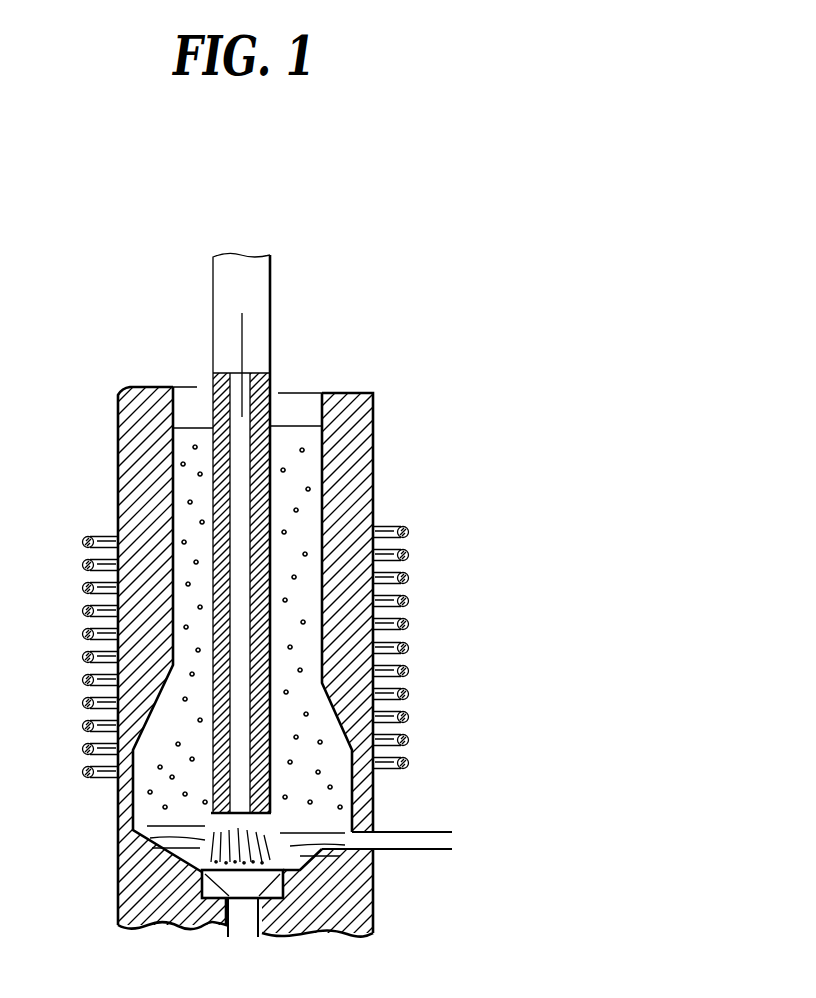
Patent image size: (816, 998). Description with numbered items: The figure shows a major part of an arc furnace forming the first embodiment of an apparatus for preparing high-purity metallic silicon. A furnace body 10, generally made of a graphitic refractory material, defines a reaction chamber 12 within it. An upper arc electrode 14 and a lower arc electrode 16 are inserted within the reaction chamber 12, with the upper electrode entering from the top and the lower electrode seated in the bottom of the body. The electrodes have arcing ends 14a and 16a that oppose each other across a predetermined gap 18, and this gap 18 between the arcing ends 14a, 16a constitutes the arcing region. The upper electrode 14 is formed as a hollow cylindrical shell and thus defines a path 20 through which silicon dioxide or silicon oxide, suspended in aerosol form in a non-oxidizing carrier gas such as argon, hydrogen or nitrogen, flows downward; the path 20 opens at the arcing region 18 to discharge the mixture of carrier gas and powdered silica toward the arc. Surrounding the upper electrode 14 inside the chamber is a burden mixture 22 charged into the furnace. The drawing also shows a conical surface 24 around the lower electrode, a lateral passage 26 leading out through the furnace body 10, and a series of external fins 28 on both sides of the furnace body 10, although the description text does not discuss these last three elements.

The furnace body 10 is at (375, 450).
The reaction chamber 12 is at (308, 413).
The upper arc electrode 14 is at (252, 291).
The arcing end of upper electrode 14a is at (255, 817).
The lower arc electrode 16 is at (243, 920).
The arcing end of lower electrode 16a is at (268, 864).
The gap 18 is at (222, 843).
The path 20 is at (250, 576).
The mixture 22 is at (298, 493).
The conical surface 24 is at (193, 868).
The discharge passage 26 is at (437, 839).
The cooling fins 28 is at (409, 623).